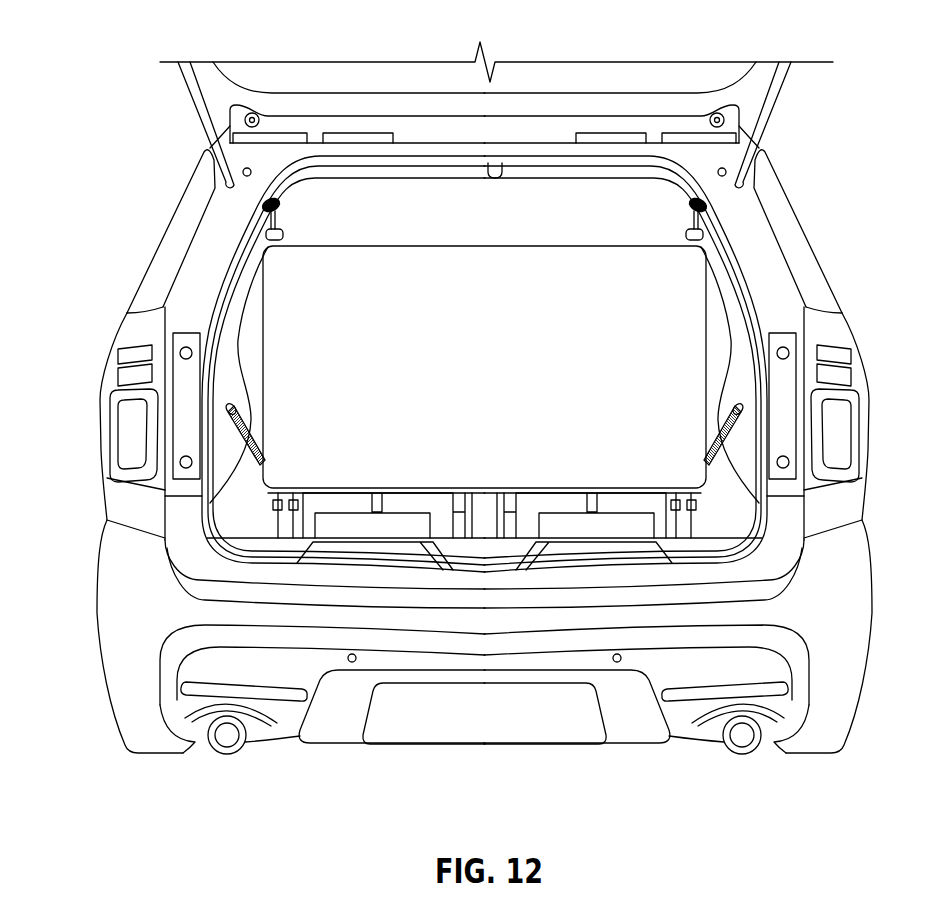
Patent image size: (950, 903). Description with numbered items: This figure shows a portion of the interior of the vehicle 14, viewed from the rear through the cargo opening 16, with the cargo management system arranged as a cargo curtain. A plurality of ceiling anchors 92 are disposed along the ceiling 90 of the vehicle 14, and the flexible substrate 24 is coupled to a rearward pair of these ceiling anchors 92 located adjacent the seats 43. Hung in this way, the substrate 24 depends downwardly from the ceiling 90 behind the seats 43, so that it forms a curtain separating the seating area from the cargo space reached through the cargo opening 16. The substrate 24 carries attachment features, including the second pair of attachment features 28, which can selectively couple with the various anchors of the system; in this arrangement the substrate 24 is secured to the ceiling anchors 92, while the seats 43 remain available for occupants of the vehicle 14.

The vehicle 14 is at (105, 310).
The cargo opening 16 is at (200, 552).
The flexible substrate 24 is at (478, 375).
The second pair of attachment features 28 is at (283, 227).
The seats 43 is at (510, 518).
The ceiling 90 is at (503, 162).
The ceiling anchors 92 is at (258, 208).